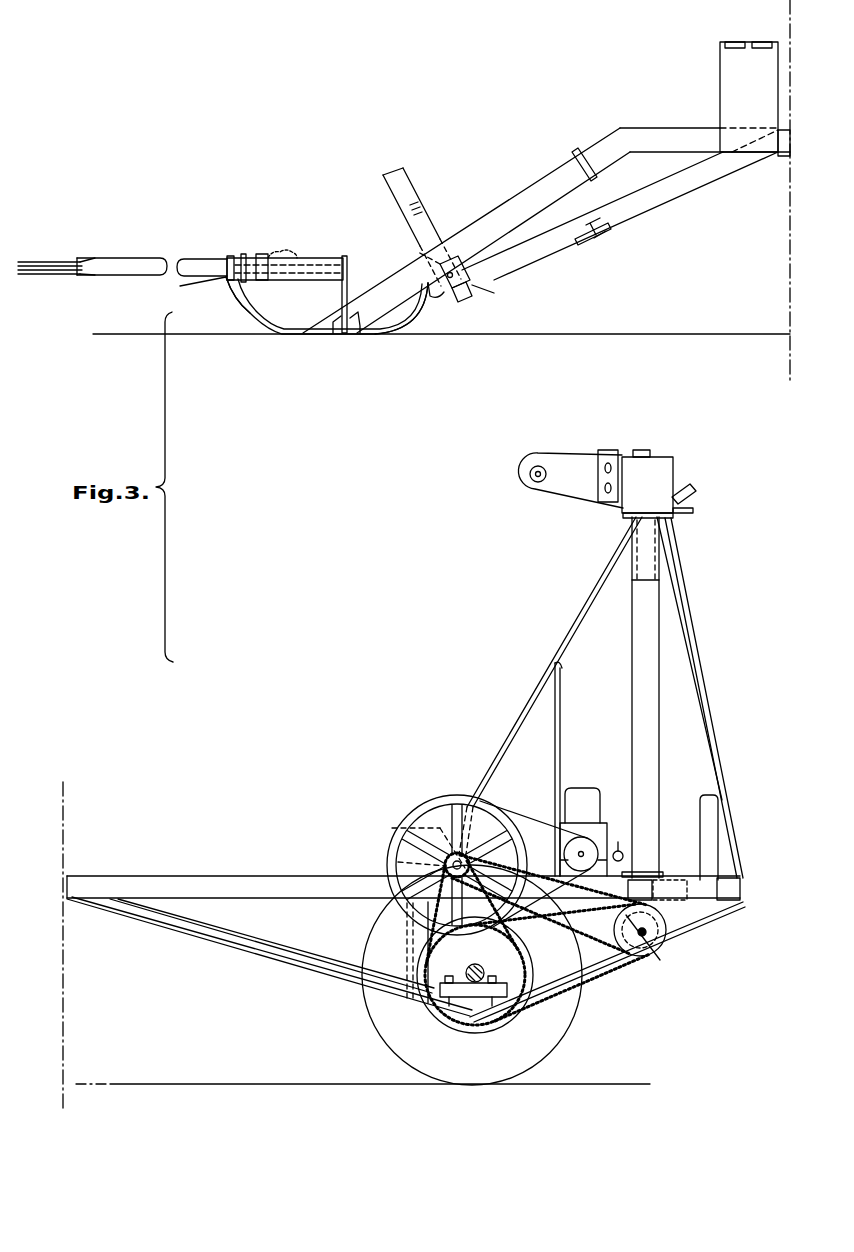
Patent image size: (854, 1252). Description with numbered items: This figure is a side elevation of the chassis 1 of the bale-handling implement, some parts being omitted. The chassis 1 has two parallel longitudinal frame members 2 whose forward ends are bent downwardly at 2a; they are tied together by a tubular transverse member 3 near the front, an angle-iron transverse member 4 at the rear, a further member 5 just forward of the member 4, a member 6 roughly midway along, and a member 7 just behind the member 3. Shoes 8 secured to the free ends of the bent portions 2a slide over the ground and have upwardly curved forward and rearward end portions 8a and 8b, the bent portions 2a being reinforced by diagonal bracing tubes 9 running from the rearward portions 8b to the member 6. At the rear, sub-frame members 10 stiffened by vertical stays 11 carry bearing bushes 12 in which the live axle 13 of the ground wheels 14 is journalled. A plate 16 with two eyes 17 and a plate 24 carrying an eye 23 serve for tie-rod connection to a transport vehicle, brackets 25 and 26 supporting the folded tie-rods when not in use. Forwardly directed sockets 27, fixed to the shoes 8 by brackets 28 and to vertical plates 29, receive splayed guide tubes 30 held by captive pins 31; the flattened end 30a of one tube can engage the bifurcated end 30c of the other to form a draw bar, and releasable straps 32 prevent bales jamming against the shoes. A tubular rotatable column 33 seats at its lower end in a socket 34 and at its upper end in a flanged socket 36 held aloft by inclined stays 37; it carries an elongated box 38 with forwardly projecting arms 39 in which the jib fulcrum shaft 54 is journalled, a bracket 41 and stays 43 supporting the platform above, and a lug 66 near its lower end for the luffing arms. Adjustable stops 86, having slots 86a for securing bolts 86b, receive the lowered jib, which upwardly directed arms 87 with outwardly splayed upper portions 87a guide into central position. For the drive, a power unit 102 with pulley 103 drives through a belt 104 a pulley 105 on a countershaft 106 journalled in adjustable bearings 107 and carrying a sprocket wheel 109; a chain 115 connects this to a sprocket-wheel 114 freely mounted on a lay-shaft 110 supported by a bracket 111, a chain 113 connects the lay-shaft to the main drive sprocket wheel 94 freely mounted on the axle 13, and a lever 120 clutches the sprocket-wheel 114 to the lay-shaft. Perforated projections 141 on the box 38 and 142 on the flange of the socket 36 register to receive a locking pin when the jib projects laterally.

The chassis 1 is at (615, 124).
The longitudinal frame members 2 is at (682, 128).
The downwardly bent forward end portions 2a is at (497, 202).
The tubular transverse member 3 is at (358, 326).
The transverse member 4 is at (742, 882).
The transverse member 5 is at (676, 890).
The transverse member 6 is at (778, 138).
The transverse member 7 is at (432, 300).
The shoes 8 is at (322, 336).
The upwardly curved forward end portions 8a is at (250, 320).
The upwardly curved rearward end portions 8b is at (413, 330).
The bracing tubes 9 is at (661, 205).
The sub-frame members 10 is at (786, 160).
The stays 11 is at (408, 944).
The bearing bushes 12 is at (483, 972).
The live axle 13 is at (477, 998).
The ground wheels 14 is at (558, 1036).
The plate 16 is at (722, 72).
The eyes 17 is at (760, 42).
The eye 23 is at (716, 778).
The plate 24 is at (718, 826).
The bracket 25 is at (573, 158).
The bracket 26 is at (554, 796).
The sockets 27 is at (330, 258).
The brackets 28 is at (243, 254).
The plates 29 is at (345, 276).
The guide tubes 30 is at (140, 258).
The flattened end portion 30a is at (76, 270).
The bifurcated end portion 30c is at (52, 258).
The pins 31 is at (262, 254).
The straps 32 is at (214, 280).
The column 33 is at (657, 670).
The socket 34 is at (655, 872).
The flanged socket 36 is at (643, 572).
The stays 37 is at (526, 704).
The box 38 is at (676, 468).
The arms 39 is at (566, 494).
The bracket 41 is at (643, 450).
The stays 43 is at (698, 488).
The shaft 54 is at (530, 478).
The lug 66 is at (622, 850).
The stops 86 is at (465, 298).
The slots 86a is at (470, 276).
The securing bolts 86b is at (452, 264).
The arms 87 is at (425, 214).
The splayed upper end portions 87a is at (404, 172).
The main drive sprocket wheel 94 is at (540, 962).
The power unit 102 is at (578, 784).
The pulley 103 is at (592, 830).
The drive belt 104 is at (494, 778).
The pulley 105 is at (414, 818).
The countershaft 106 is at (400, 862).
The bearings 107 is at (471, 849).
The sprocket wheel 109 is at (398, 830).
The lay-shaft 110 is at (644, 958).
The bracket 111 is at (665, 942).
The driving chain 113 is at (602, 912).
The sprocket-wheel 114 is at (658, 960).
The driving chain 115 is at (568, 928).
The lever 120 is at (718, 908).
The projection 141 is at (697, 512).
The projection 142 is at (648, 513).